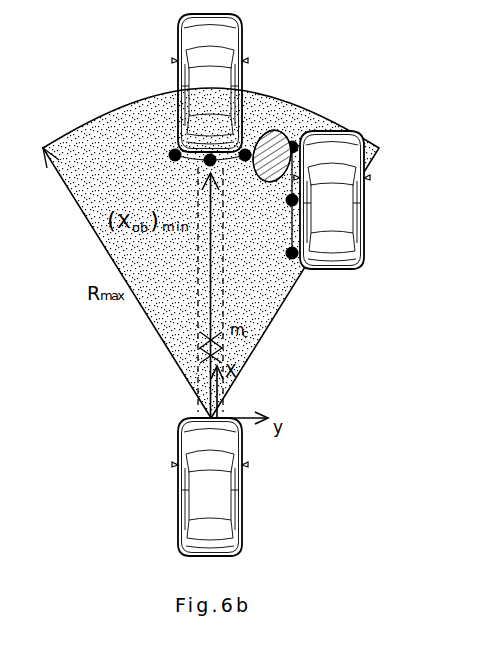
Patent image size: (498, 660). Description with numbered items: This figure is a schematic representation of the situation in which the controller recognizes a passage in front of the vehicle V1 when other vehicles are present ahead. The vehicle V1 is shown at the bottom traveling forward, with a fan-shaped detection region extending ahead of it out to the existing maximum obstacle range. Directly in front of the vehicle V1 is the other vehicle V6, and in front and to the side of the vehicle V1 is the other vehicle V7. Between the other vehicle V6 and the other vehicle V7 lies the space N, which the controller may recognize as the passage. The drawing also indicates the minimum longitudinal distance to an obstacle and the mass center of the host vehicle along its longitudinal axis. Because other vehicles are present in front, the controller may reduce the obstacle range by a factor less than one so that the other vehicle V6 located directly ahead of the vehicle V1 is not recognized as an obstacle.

The other vehicle V6 is at (220, 81).
The other vehicle V7 is at (344, 200).
The vehicle V1 is at (222, 487).
The space N is at (277, 132).